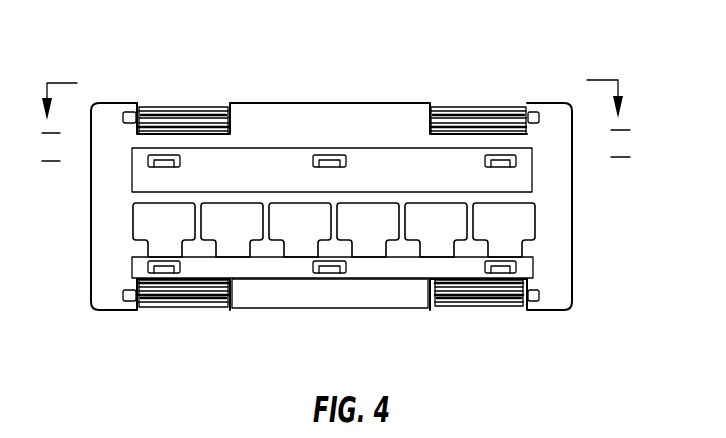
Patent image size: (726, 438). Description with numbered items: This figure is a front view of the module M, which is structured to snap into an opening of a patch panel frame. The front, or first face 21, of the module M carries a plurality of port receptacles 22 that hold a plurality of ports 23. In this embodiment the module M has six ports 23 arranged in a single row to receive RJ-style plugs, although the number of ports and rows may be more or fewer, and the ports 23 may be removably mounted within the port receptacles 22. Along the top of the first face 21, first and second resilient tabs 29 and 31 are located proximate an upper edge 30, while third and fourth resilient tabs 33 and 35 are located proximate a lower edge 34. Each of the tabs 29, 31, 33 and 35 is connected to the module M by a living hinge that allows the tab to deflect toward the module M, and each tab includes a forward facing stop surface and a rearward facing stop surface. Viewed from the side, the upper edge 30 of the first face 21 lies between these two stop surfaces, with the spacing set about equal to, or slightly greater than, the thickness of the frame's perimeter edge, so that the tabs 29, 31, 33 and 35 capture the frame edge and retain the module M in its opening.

The first face 21 is at (406, 136).
The port receptacles 22 is at (131, 223).
The ports 23 is at (176, 235).
The first resilient tab 29 is at (178, 92).
The upper edge 30 is at (296, 102).
The second resilient tab 31 is at (482, 89).
The third resilient tab 33 is at (176, 322).
The lower edge 34 is at (327, 308).
The fourth resilient tab 35 is at (500, 325).
The module M is at (629, 222).